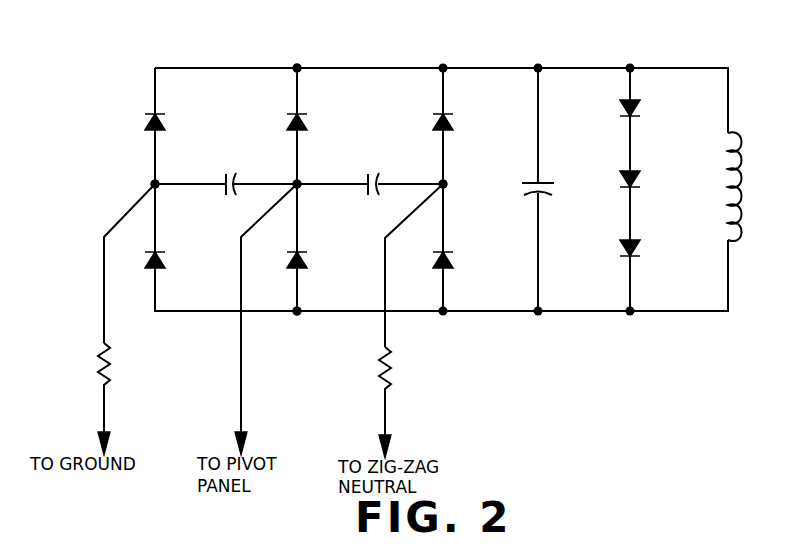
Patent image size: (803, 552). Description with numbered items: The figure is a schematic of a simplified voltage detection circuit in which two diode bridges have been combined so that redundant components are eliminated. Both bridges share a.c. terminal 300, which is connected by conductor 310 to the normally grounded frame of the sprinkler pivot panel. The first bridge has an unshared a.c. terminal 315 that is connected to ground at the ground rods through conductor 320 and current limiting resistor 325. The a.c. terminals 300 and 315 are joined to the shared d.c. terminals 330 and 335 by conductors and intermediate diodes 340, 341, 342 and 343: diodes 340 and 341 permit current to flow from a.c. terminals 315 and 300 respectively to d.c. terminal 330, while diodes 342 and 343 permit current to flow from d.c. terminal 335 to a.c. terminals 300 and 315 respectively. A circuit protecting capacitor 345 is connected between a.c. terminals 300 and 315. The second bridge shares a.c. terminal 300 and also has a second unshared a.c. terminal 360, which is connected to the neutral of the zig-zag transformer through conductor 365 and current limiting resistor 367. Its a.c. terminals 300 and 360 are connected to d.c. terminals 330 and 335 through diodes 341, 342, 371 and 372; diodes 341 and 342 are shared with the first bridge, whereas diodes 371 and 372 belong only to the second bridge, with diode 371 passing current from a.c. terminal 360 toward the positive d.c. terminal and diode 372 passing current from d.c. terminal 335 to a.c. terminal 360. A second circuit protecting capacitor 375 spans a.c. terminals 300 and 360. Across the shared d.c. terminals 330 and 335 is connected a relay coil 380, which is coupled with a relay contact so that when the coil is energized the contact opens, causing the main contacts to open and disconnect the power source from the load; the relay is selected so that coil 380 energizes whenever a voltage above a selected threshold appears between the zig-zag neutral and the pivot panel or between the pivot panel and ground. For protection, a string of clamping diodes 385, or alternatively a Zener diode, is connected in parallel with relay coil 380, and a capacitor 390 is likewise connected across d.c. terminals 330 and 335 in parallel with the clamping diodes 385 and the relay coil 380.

The shared a.c. terminal 300 is at (297, 184).
The conductor 310 is at (242, 345).
The unshared a.c. terminal 315 is at (155, 184).
The conductor 320 is at (104, 288).
The current limiting resistor 325 is at (110, 362).
The shared d.c. terminal 330 is at (297, 68).
The shared d.c. terminal 335 is at (297, 313).
The diode 340 is at (163, 117).
The diode 341 is at (304, 117).
The diode 342 is at (302, 253).
The diode 343 is at (160, 253).
The circuit protecting capacitor 345 is at (226, 175).
The unshared a.c. terminal 360 is at (443, 184).
The conductor 365 is at (386, 322).
The current limiting resistor 367 is at (391, 368).
The diode 371 is at (450, 117).
The diode 372 is at (448, 253).
The circuit protecting capacitor 375 is at (368, 175).
The relay coil 380 is at (728, 162).
The string of clamping diodes 385 is at (634, 168).
The capacitor 390 is at (540, 183).